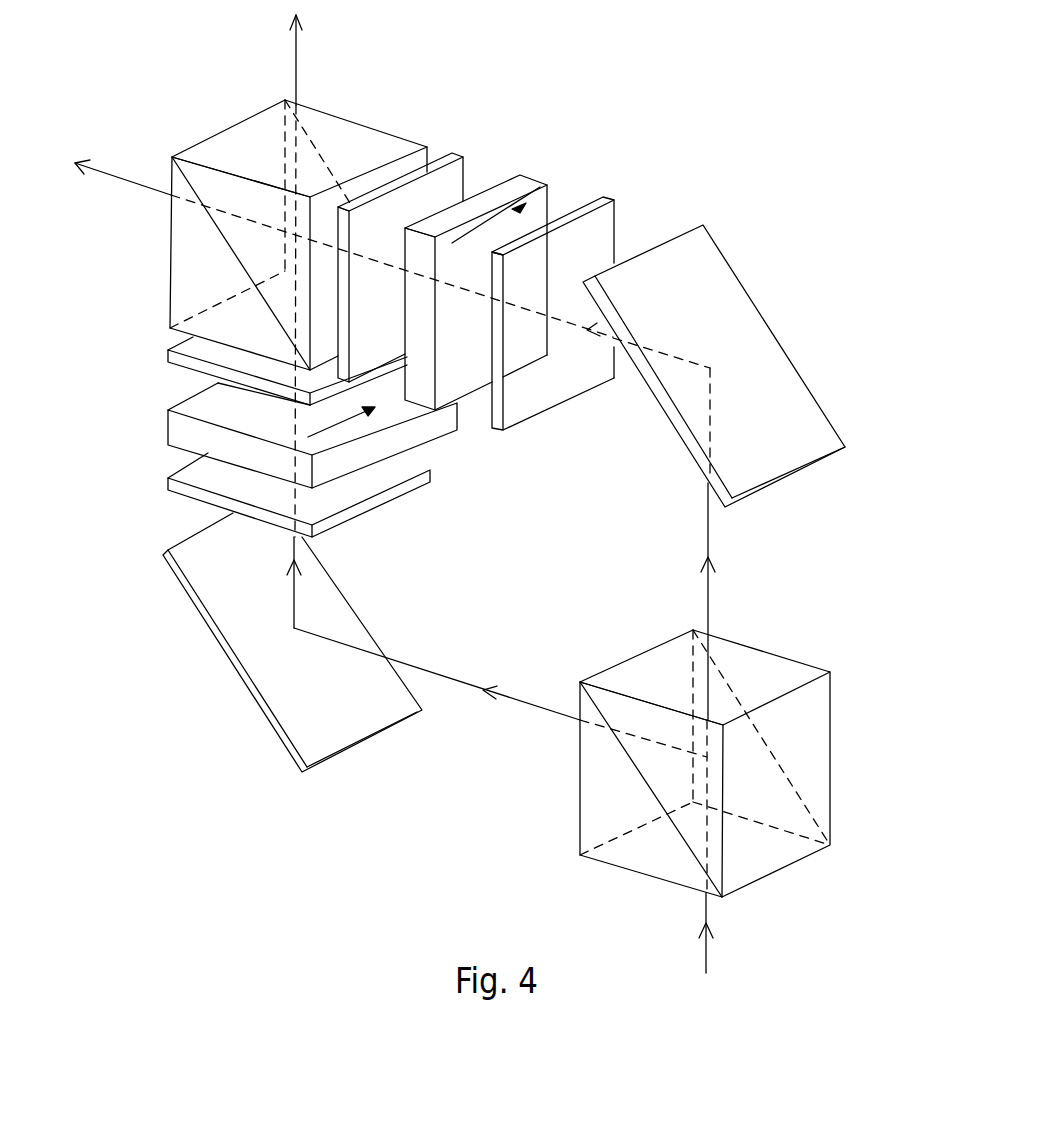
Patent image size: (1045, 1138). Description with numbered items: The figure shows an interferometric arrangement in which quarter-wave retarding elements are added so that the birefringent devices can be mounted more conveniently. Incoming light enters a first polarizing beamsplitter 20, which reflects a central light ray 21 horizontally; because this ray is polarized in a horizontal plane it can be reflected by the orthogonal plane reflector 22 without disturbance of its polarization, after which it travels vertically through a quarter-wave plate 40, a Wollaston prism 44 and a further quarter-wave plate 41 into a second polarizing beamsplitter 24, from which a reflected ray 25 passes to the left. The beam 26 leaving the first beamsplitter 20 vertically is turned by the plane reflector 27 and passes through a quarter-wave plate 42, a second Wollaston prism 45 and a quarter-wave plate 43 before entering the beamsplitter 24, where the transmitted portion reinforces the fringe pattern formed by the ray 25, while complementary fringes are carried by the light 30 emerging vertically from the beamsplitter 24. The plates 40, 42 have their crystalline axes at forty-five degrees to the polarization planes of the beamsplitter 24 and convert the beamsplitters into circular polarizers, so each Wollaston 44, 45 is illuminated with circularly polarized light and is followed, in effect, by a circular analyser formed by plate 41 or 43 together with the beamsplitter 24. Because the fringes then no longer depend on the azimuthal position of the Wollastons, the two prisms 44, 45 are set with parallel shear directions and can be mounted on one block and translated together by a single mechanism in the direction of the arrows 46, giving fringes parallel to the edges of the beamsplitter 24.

The first polarizing beamsplitter 20 is at (832, 800).
The central light ray 21 is at (450, 673).
The orthogonal plane reflector 22 is at (287, 753).
The second polarizing beamsplitter 24 is at (170, 280).
The reflected ray 25 is at (132, 183).
The vertical beam 26 is at (710, 548).
The plane reflector 27 is at (820, 402).
The emerging light 30 is at (300, 72).
The quarter-wave birefringent retarding plate 40 is at (168, 490).
The quarter-wave birefringent retarding plate 41 is at (168, 353).
The quarter-wave birefringent retarding plate 42 is at (613, 203).
The quarter-wave birefringent retarding plate 43 is at (453, 158).
The Wollaston prism 44 is at (168, 428).
The Wollaston prism 45 is at (535, 182).
The arrows 46 is at (483, 220).